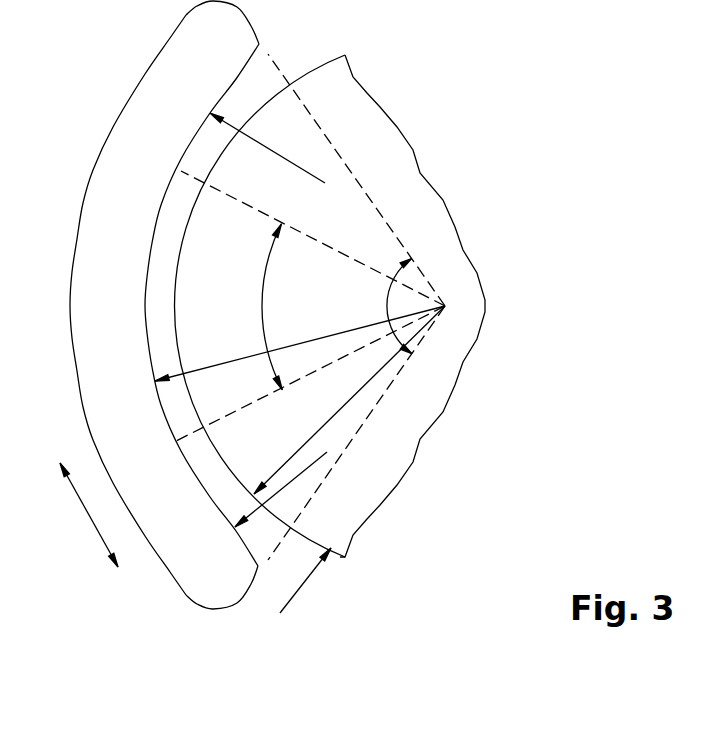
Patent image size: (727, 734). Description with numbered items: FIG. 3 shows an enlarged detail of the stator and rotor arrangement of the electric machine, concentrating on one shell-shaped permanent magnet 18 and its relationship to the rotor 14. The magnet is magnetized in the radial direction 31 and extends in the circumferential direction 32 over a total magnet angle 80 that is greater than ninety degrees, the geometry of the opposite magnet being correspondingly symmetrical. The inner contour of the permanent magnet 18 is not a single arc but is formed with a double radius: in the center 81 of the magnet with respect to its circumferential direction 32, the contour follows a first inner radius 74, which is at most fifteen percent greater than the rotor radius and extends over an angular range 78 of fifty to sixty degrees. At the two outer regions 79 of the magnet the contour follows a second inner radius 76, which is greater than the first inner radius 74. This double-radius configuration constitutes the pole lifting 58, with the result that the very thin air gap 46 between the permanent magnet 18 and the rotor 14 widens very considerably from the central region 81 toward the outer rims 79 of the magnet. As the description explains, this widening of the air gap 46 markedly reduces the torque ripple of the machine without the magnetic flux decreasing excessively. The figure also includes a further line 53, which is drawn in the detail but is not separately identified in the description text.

The rotor 14 is at (333, 58).
The permanent magnet 18 is at (141, 305).
The radial direction 31 is at (307, 580).
The circumferential direction 32 is at (84, 518).
The air gap 46 is at (162, 268).
The boundary line 53 is at (340, 410).
The pole lifting 58 is at (243, 82).
The first inner radius 74 is at (310, 340).
The second inner radius 76 is at (280, 154).
The angular range 78 is at (263, 305).
The outer regions 79 is at (183, 48).
The total magnet angle 80 is at (387, 306).
The center 81 is at (86, 328).